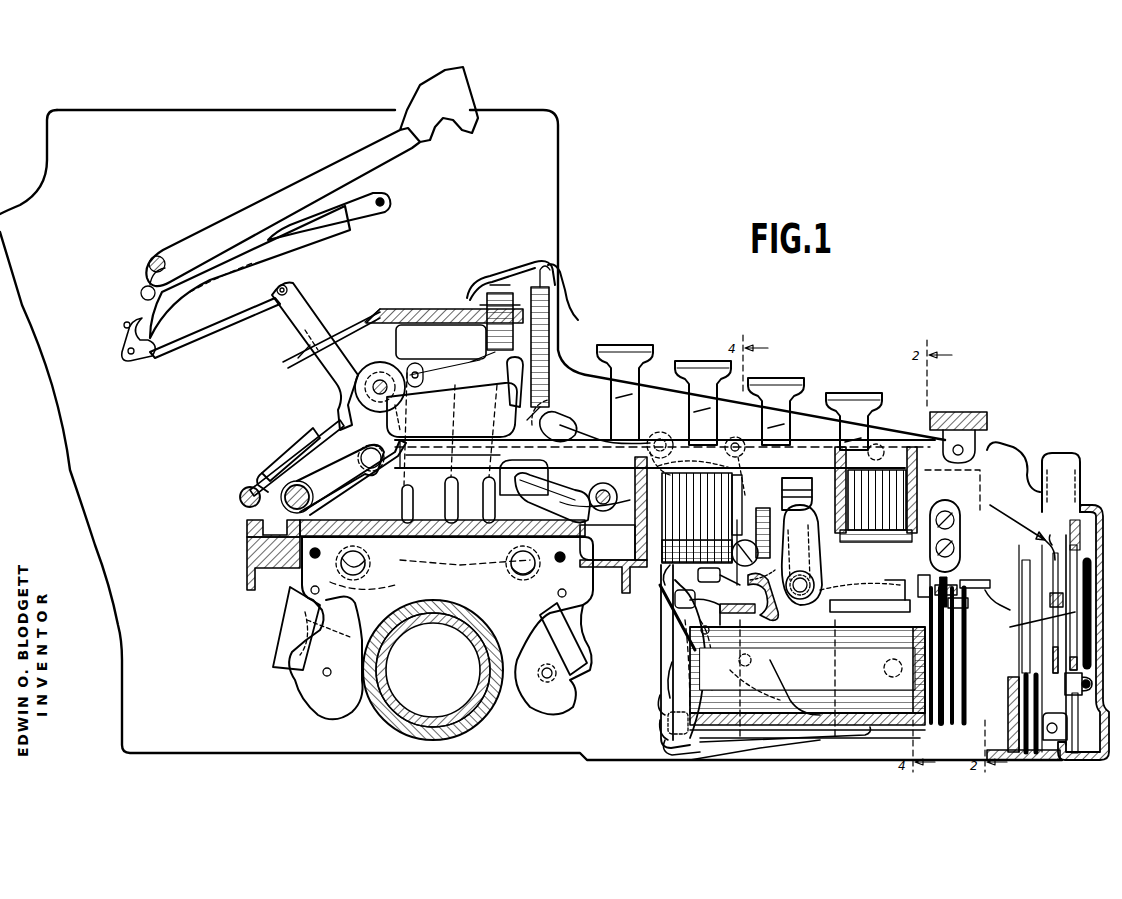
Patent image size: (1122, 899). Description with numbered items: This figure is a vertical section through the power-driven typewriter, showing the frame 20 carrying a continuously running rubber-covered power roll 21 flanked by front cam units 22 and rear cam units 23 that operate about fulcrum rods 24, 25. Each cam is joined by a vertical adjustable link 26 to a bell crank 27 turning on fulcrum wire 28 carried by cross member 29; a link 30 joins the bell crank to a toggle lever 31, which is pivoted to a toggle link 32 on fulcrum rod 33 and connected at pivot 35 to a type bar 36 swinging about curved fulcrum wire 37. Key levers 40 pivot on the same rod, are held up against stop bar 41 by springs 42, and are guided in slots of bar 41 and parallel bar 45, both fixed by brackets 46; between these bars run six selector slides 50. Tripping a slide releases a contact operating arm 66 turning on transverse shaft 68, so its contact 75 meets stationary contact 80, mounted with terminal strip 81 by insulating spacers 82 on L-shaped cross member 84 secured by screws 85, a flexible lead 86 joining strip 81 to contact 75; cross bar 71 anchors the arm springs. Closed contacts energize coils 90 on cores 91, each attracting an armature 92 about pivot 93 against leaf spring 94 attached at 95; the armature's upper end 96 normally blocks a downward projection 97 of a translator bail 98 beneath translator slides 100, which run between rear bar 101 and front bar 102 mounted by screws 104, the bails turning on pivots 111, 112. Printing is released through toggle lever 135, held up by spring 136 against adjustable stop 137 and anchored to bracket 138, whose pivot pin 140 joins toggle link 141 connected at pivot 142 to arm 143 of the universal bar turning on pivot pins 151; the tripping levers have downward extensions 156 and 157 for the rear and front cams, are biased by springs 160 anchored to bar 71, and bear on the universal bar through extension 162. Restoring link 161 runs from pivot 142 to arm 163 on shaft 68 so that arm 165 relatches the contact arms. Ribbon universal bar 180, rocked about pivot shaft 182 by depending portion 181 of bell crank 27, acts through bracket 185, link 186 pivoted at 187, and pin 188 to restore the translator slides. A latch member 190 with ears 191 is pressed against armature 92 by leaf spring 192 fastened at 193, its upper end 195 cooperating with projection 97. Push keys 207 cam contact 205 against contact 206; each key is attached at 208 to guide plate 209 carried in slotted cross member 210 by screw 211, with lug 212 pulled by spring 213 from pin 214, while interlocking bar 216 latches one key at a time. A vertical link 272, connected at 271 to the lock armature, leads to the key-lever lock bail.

The frame 20 is at (247, 550).
The power roll 21 is at (485, 712).
The front cam units 22 is at (585, 590).
The rear cam units 23 is at (294, 592).
The fulcrum rod 24 is at (565, 568).
The fulcrum rod 25 is at (310, 560).
The vertical adjustable link 26 is at (433, 504).
The bell crank 27 is at (330, 355).
The fulcrum wire 28 is at (372, 387).
The cross member 29 is at (440, 322).
The lever 30 is at (205, 335).
The toggle lever 31 is at (212, 275).
The toggle link 32 is at (365, 228).
The fixed fulcrum rod 33 is at (385, 200).
The pivotal connection 35 is at (138, 290).
The type bar 36 is at (272, 195).
The curved fulcrum wire 37 is at (150, 258).
The key levers 40 is at (812, 440).
The stop bar 41 is at (930, 486).
The springs 42 is at (550, 396).
The parallel bar 45 is at (847, 448).
The brackets 46 is at (960, 530).
The selector slides 50 is at (878, 463).
The contact operating arm 66 is at (948, 585).
The transverse shaft 68 is at (800, 600).
The cross bar 71 is at (760, 610).
The electrical contact 75 is at (985, 578).
The stationary electrical contact 80 is at (992, 606).
The terminal strip 81 is at (930, 612).
The insulating spacers 82 is at (940, 725).
The L-shaped cross member 84 is at (888, 732).
The screws 85 is at (885, 668).
The flexible lead 86 is at (960, 608).
The coils 90 is at (710, 622).
The magnetic cores 91 is at (706, 648).
The armature 92 is at (665, 667).
The stationary pivot 93 is at (660, 725).
The leaf spring 94 is at (862, 738).
The attachment point 95 is at (748, 750).
The upper end portion 96 is at (698, 600).
The downward projection 97 is at (702, 575).
The bail 98 is at (725, 585).
The translator slides 100 is at (675, 475).
The rear transverse bar 101 is at (630, 570).
The front cross bar 102 is at (724, 555).
The screws 104 is at (745, 604).
The fixed pivot 111 is at (722, 505).
The fixed pivot 112 is at (647, 468).
The toggle lever 135 is at (465, 380).
The spring 136 is at (590, 285).
The adjustable stop 137 is at (470, 312).
The bracket 138 is at (500, 268).
The pivot pin 140 is at (568, 420).
The toggle link 141 is at (598, 435).
The pivot 142 is at (642, 438).
The arm 143 is at (560, 462).
The pivot pins 151 is at (608, 520).
The downward extensions 156 is at (352, 502).
The downward extensions 157 is at (548, 496).
The springs 160 is at (756, 533).
The link 161 is at (660, 445).
The pin 162 is at (796, 488).
The arm 163 is at (745, 447).
The arm 165 is at (890, 606).
The ribbon universal bar 180 is at (313, 429).
The depending portion 181 is at (336, 436).
The pivot shaft 182 is at (238, 495).
The bracket 185 is at (256, 478).
The link 186 is at (338, 476).
The pivot 187 is at (283, 500).
The pin 188 is at (381, 452).
The latch member 190 is at (668, 628).
The ear portions 191 is at (742, 665).
The leaf spring 192 is at (668, 640).
The attachment point 193 is at (665, 750).
The upper end portion 195 is at (662, 598).
The electrical contact 205 is at (1058, 555).
The companion contact 206 is at (1022, 575).
The manually operable keys 207 is at (1056, 458).
The attachment point 208 is at (1089, 590).
The vertical guide plate 209 is at (1082, 526).
The stationary cross member 210 is at (1085, 599).
The screw 211 is at (1020, 632).
The lug 212 is at (1088, 700).
The spring 213 is at (1070, 578).
The pin 214 is at (1030, 540).
The interlocking bar 216 is at (1050, 648).
The connection 271 is at (802, 660).
The vertical link 272 is at (838, 607).